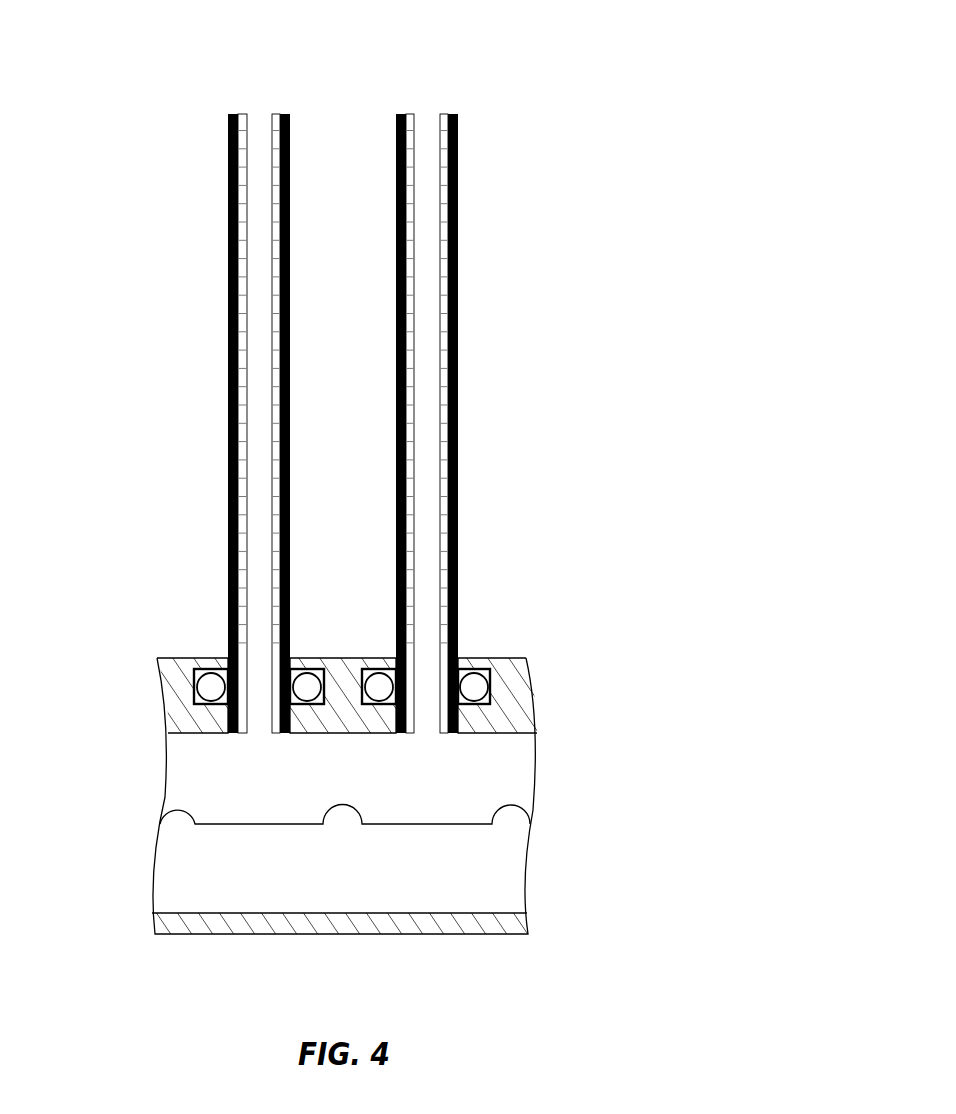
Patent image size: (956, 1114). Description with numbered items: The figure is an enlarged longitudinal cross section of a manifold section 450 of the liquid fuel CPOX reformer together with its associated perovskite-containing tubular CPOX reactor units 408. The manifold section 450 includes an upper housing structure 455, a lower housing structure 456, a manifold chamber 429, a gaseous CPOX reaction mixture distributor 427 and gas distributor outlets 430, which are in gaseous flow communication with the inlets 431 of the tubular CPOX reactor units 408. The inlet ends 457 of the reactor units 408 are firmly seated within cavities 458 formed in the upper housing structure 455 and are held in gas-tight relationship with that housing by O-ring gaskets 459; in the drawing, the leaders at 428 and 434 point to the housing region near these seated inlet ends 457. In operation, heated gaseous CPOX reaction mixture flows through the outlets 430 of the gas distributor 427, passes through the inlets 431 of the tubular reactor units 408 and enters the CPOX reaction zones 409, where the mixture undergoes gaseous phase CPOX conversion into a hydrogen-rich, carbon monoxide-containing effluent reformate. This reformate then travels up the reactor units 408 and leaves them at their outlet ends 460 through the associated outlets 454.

The manifold section 450 is at (522, 100).
The outlet ends 460 is at (258, 94).
The outlets 454 is at (428, 125).
The CPOX reaction zones 409 is at (255, 337).
The tubular CPOX reactor units 408 is at (396, 500).
The inlet ends 457 is at (256, 714).
The O-ring gaskets 459 is at (211, 685).
The upper housing structure 455 is at (158, 680).
The header 428 is at (153, 690).
The cavities 458 is at (228, 722).
The header wall 434 is at (175, 744).
The gas distributor 427 is at (168, 797).
The gas distributor outlets 430 is at (185, 814).
The manifold chamber 429 is at (180, 865).
The inlets 431 is at (258, 741).
The lower housing structure 456 is at (219, 936).